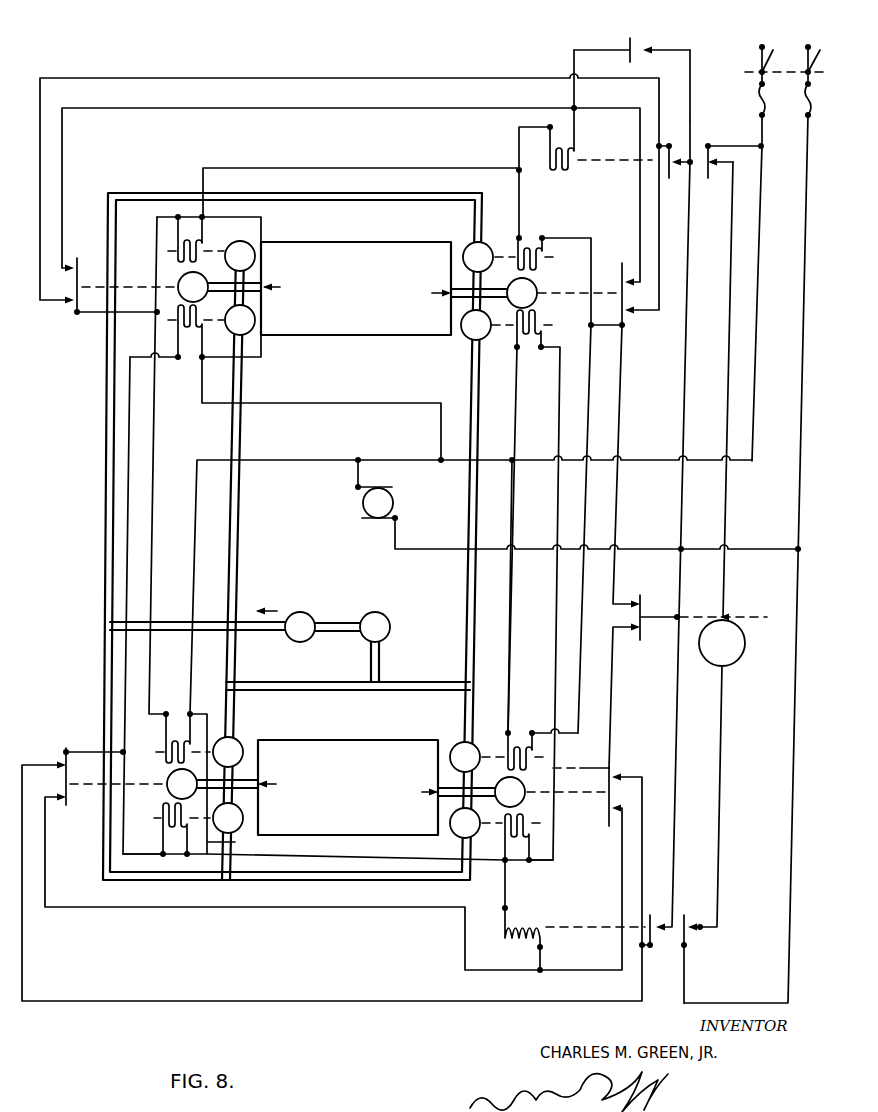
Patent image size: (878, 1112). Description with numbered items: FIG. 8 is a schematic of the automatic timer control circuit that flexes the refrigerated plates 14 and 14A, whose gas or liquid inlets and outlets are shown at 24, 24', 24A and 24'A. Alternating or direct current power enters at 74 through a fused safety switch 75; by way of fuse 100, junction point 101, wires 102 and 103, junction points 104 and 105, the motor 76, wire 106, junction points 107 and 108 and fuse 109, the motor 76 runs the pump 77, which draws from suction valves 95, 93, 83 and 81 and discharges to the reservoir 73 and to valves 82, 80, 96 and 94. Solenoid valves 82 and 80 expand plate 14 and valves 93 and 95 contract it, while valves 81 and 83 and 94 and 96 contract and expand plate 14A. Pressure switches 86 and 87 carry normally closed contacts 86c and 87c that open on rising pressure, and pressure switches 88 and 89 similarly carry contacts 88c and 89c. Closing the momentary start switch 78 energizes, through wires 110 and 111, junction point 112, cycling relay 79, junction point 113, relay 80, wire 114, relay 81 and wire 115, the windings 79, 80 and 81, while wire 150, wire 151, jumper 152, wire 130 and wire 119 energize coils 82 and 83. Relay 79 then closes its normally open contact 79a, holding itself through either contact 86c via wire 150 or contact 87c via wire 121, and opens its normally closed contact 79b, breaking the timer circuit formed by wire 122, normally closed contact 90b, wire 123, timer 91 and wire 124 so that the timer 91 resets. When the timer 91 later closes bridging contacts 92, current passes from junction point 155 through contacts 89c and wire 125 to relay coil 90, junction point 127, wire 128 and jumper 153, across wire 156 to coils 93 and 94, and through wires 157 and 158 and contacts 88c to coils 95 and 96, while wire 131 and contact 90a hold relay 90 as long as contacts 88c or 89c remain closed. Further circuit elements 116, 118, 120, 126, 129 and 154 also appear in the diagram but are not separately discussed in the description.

The refrigerated plate 14 is at (362, 335).
The refrigerated plate 14A is at (346, 745).
The inlet and outlet 24 is at (281, 287).
The inlet and outlet 24' is at (432, 292).
The inlet and outlet 24A is at (282, 785).
The inlet and outlet 24'A is at (418, 792).
The reservoir 73 is at (300, 627).
The power supply 74 is at (789, 39).
The fused safety switch 75 is at (785, 68).
The motor 76 is at (376, 502).
The gas or liquid pump 77 is at (375, 627).
The single-pole momentary contact switch 78 is at (632, 42).
The cycling control relay 79 is at (564, 146).
The normally open contact 79a is at (671, 151).
The normally closed contact 79b is at (725, 151).
The solenoid control valve 80 is at (527, 280).
The solenoid control valve 81 is at (514, 750).
The solenoid control valve 82 is at (211, 242).
The solenoid control valve 83 is at (199, 739).
The pressure operated electric switch 86 is at (219, 287).
The normally closed double contacts 86c is at (104, 285).
The pressure operated electric switch 87 is at (535, 293).
The normally closed double contacts 87c is at (637, 294).
The pressure switch 88 is at (212, 784).
The normally closed contacts 88c is at (97, 776).
The pressure switch 89 is at (522, 792).
The normally closed contacts 89c is at (625, 797).
The cycling control relay 90 is at (575, 932).
The normally open contact 90a is at (656, 920).
The normally closed contact 90b is at (697, 947).
The timer 91 is at (726, 664).
The electrical switch 92 is at (624, 546).
The solenoid control valve 93 is at (507, 330).
The solenoid control valve 94 is at (496, 835).
The solenoid control valve 95 is at (211, 332).
The solenoid control valve 96 is at (198, 830).
The fuse 100 is at (747, 115).
The junction point 101 is at (777, 147).
The wire 102 is at (757, 320).
The wire 103 is at (661, 465).
The junction point 104 is at (518, 464).
The junction point 105 is at (439, 466).
The wire 106 is at (650, 551).
The junction point 107 is at (681, 550).
The junction point 108 is at (782, 542).
The fuse 109 is at (804, 104).
The wire 110 is at (686, 316).
The wire 111 is at (692, 86).
The junction point 112 is at (588, 79).
The junction point 113 is at (516, 170).
The wire 114 is at (588, 422).
The wire 115 is at (524, 596).
The conductor 116 is at (312, 168).
The conductor 118 is at (156, 457).
The wire 119 is at (283, 462).
The junction 120 is at (358, 456).
The wire 121 is at (637, 137).
The wire 122 is at (787, 794).
The wire 123 is at (727, 746).
The wire 124 is at (728, 361).
The wire 125 is at (617, 884).
The conductor 126 is at (557, 417).
The junction point 127 is at (503, 858).
The wire 128 is at (324, 858).
The mechanical linkage frame 129 is at (115, 444).
The wire 130 is at (336, 404).
The wire 131 is at (677, 746).
The wire 150 is at (318, 108).
The wire 151 is at (92, 316).
The jumper 152 is at (262, 236).
The jumper 153 is at (227, 784).
The junction 154 is at (622, 327).
The junction point 155 is at (703, 606).
The wire 156 is at (581, 758).
The wire 157 is at (306, 912).
The wire 158 is at (84, 752).